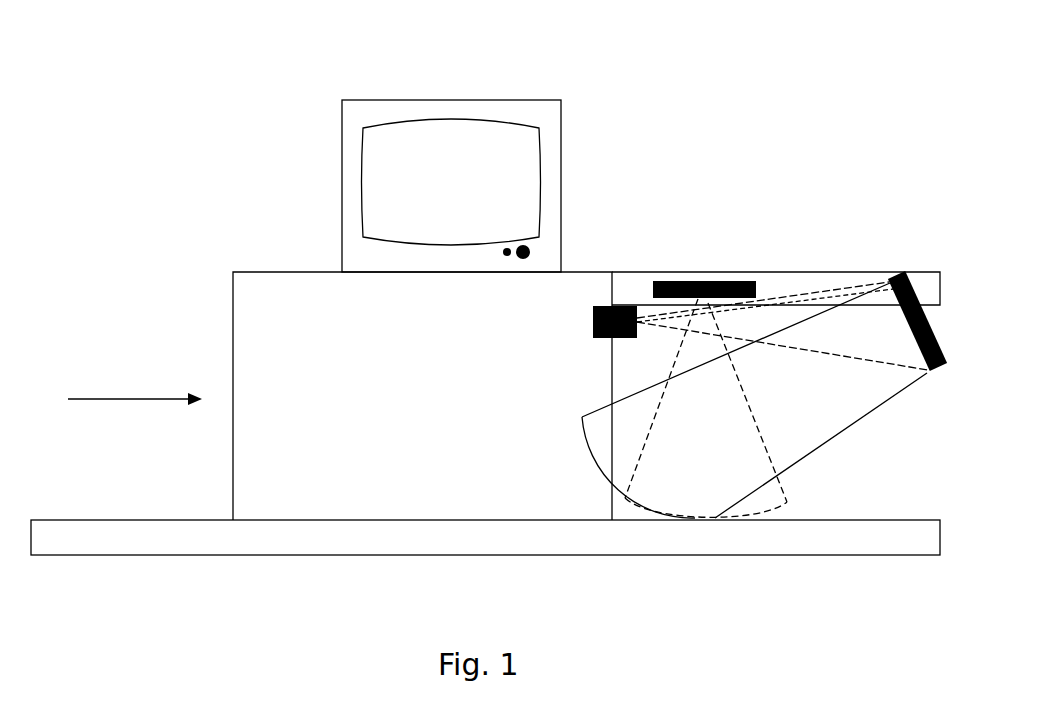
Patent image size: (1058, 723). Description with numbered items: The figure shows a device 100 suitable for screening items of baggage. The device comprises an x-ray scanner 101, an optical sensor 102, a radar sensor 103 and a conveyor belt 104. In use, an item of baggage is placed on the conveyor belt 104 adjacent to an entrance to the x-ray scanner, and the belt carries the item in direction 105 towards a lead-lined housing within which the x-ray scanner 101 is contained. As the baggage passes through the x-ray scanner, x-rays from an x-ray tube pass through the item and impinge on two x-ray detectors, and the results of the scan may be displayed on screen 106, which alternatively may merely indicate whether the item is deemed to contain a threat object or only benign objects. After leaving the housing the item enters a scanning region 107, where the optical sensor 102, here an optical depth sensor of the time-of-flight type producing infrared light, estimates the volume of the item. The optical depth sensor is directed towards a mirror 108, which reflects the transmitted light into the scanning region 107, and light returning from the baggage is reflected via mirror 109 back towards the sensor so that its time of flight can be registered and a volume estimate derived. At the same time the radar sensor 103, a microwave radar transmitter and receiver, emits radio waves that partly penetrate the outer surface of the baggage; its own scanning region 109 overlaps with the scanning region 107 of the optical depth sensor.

The device 100 is at (162, 49).
The x-ray scanner 101 is at (250, 310).
The optical sensor 102 is at (611, 306).
The radar sensor 103 is at (708, 303).
The conveyor belt 104 is at (117, 542).
The direction 105 is at (128, 399).
The screen 106 is at (368, 105).
The scanning region 107 is at (847, 410).
The mirror 108 is at (893, 273).
The scanning region of the radar sensor 109 is at (635, 507).